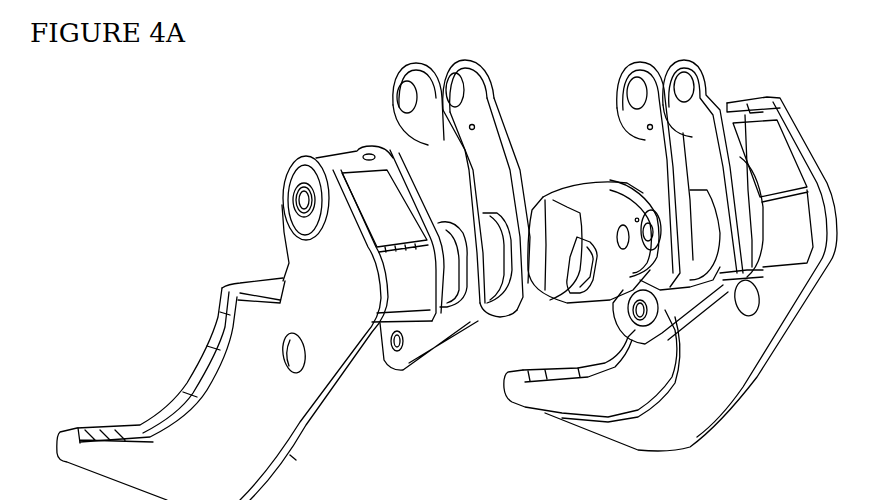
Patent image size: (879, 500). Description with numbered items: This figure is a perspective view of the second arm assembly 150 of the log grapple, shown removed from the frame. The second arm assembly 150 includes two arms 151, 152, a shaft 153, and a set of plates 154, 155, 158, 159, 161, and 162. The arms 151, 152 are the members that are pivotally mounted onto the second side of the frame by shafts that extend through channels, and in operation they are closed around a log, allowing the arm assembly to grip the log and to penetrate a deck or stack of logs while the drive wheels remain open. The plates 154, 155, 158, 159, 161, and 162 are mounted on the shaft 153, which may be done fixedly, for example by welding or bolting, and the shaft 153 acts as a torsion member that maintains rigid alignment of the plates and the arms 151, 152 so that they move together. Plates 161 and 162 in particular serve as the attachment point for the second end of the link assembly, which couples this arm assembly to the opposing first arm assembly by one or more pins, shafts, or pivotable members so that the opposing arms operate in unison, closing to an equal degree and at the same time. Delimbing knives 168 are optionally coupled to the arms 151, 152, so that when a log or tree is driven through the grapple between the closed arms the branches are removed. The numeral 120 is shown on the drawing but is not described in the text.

The pivot boss 120 is at (297, 200).
The second arm assembly 150 is at (212, 130).
The arm 151 is at (270, 437).
The arm 152 is at (637, 423).
The shaft 153 is at (533, 237).
The plate 154 is at (720, 120).
The plate 155 is at (622, 90).
The plate 158 is at (616, 130).
The plate 159 is at (583, 200).
The plate 161 is at (457, 77).
The plate 162 is at (430, 165).
The delimbing knife 168 is at (197, 367).